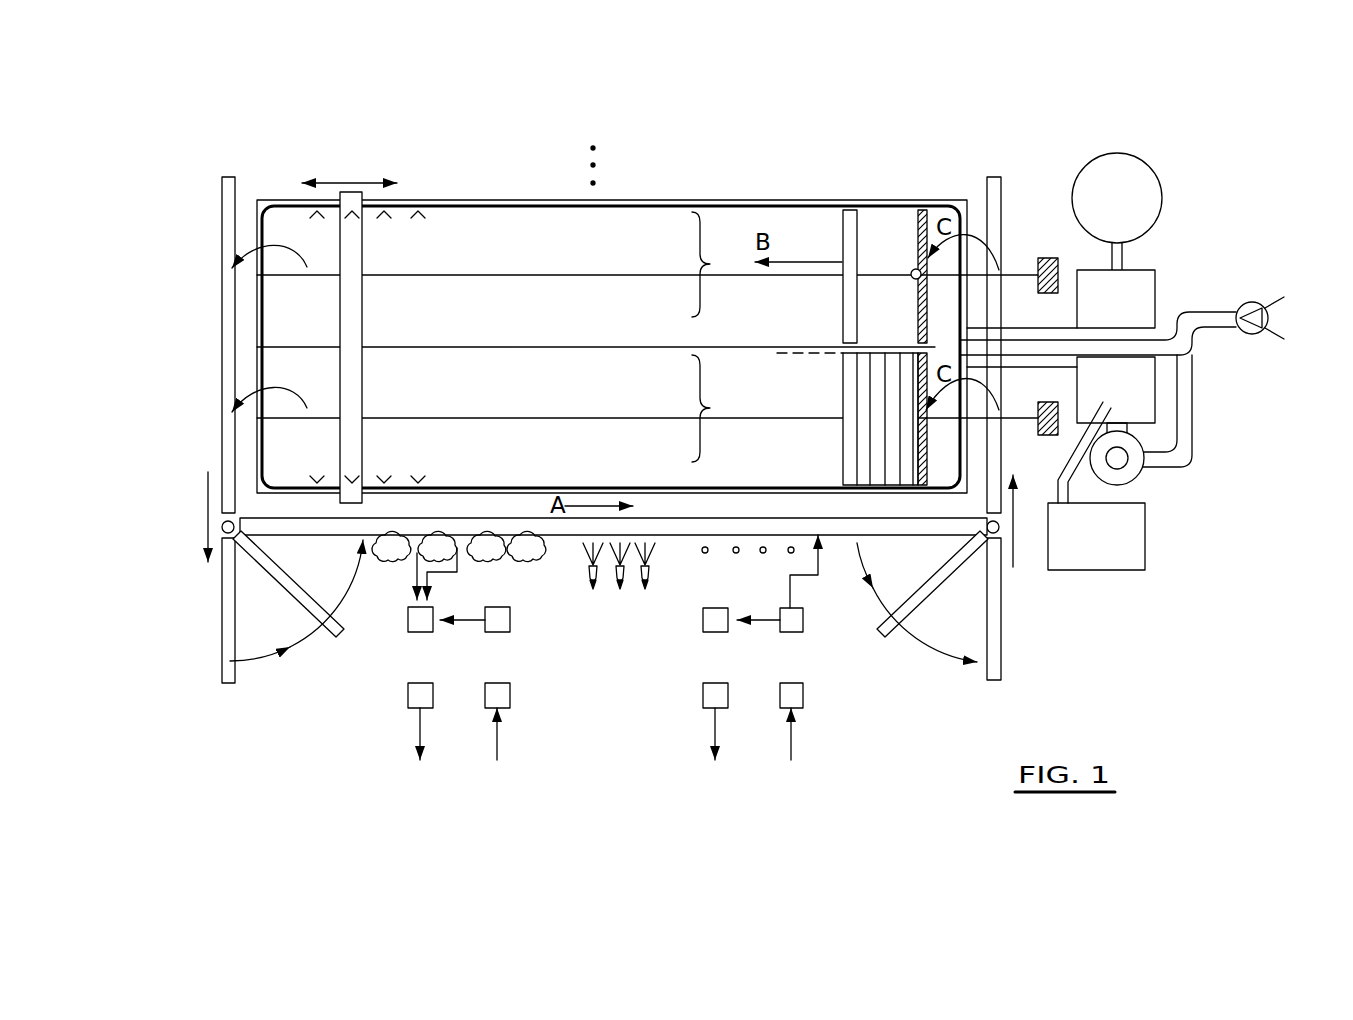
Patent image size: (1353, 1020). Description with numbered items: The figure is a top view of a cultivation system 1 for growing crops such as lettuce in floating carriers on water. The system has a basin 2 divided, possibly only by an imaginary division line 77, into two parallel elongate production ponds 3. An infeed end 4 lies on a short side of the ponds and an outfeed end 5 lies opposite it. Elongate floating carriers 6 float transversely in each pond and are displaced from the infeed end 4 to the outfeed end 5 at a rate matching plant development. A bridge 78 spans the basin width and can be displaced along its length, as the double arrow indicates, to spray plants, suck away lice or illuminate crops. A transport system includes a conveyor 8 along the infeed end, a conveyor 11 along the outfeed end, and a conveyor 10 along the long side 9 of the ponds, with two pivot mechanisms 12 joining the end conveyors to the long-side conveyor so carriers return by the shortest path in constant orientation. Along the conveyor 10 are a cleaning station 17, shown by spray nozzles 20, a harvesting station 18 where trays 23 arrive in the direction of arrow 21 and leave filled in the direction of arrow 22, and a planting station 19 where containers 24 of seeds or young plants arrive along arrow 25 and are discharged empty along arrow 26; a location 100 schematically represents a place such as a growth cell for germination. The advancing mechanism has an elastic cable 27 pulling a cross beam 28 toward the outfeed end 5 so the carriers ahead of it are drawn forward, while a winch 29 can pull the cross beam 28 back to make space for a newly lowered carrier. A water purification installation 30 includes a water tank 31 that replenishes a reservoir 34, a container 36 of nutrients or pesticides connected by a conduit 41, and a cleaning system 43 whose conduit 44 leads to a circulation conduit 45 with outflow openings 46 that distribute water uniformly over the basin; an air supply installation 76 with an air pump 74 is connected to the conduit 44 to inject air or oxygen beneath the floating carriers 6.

The cultivation system 1 is at (333, 772).
The basin 2 is at (543, 215).
The production ponds 3 is at (709, 337).
The infeed end 4 is at (953, 185).
The outfeed end 5 is at (268, 180).
The floating carriers 6 is at (843, 381).
The conveyor 8 is at (1001, 205).
The long side 9 is at (583, 473).
The conveyor 10 is at (728, 518).
The conveyor 11 is at (227, 330).
The pivot mechanisms 12 is at (203, 617).
The cleaning station 17 is at (627, 602).
The harvesting station 18 is at (512, 673).
The planting station 19 is at (678, 700).
The spray nozzles 20 is at (653, 570).
The arrow 21 is at (498, 745).
The arrow 22 is at (420, 728).
The trays 23 is at (500, 615).
The containers 24 is at (803, 617).
The arrow 25 is at (793, 748).
The arrow 26 is at (712, 728).
The elastic cable 27 is at (393, 277).
The cross beam 28 is at (922, 323).
The winch 29 is at (1055, 258).
The water purification installation 30 is at (1177, 655).
The water tank 31 is at (1130, 162).
The reservoir 34 is at (1145, 305).
The container 36 is at (1130, 556).
The conduit 41 is at (1073, 468).
The cleaning system 43 is at (1127, 475).
The conduit 44 is at (1186, 440).
The circulation conduit 45 is at (592, 208).
The outflow openings 46 is at (382, 216).
The air pump 74 is at (1238, 308).
The air supply installation 76 is at (1208, 342).
The division line 77 is at (577, 347).
The bridge 78 is at (347, 315).
The location 100 is at (868, 725).